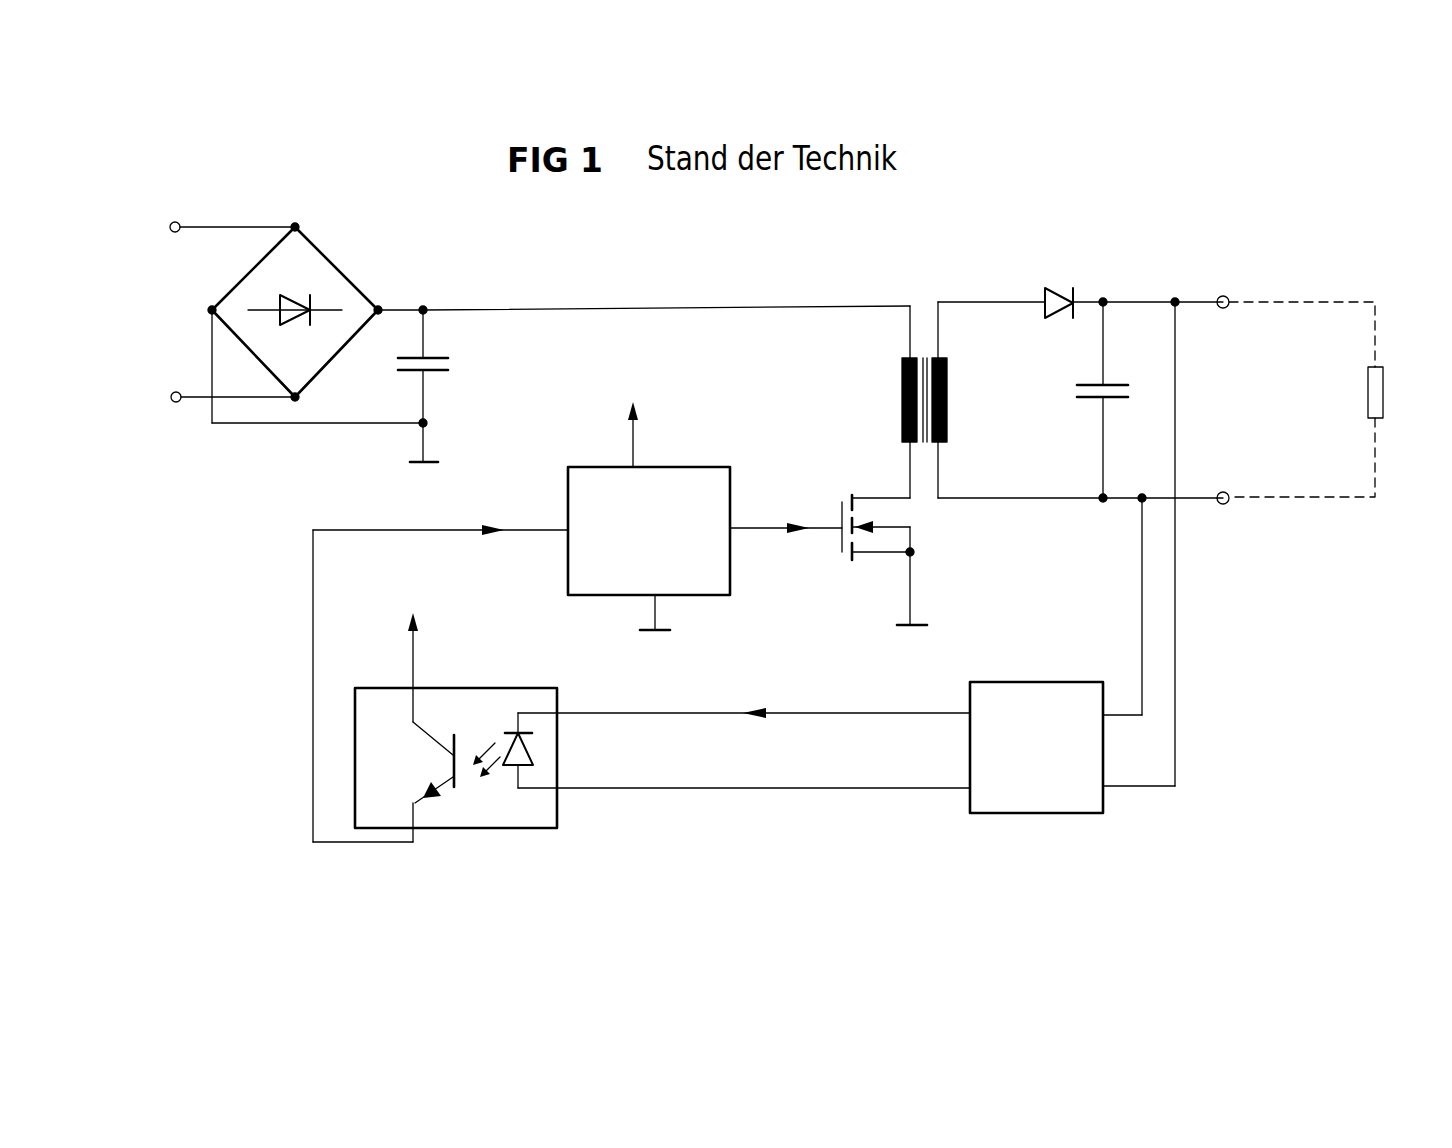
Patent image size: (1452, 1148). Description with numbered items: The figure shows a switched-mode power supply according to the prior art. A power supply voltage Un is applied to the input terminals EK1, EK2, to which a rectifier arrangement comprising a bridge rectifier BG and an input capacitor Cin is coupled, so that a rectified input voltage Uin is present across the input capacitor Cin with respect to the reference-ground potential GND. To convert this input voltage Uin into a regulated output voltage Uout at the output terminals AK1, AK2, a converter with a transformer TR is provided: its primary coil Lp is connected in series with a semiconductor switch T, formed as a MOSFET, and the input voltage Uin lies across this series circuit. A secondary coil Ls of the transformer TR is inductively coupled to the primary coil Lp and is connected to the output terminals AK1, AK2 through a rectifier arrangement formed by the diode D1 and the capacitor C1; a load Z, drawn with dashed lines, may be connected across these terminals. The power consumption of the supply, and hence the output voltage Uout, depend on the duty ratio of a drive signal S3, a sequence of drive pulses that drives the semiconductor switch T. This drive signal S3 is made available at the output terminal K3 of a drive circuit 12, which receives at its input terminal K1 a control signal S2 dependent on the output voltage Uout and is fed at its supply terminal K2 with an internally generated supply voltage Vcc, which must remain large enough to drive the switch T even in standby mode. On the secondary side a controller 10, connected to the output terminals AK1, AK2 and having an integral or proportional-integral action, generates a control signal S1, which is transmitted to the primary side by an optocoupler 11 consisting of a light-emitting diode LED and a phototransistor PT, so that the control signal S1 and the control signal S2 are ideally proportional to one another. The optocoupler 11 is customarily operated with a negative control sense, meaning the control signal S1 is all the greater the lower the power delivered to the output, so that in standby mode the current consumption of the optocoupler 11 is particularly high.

The controller 10 is at (1037, 815).
The optocoupler 11 is at (491, 798).
The drive circuit 12 is at (705, 467).
The bridge rectifier BG is at (340, 263).
The input capacitor Cin is at (452, 362).
The capacitor C1 is at (1077, 388).
The diode D1 is at (1057, 287).
The transformer TR is at (925, 377).
The primary coil Lp is at (902, 377).
The secondary coil Ls is at (947, 387).
The semiconductor switch T is at (845, 495).
The load Z is at (1385, 393).
The phototransistor PT is at (450, 762).
The light-emitting diode LED is at (533, 755).
The input terminal EK1 is at (175, 221).
The input terminal EK2 is at (176, 403).
The output terminal AK1 is at (1222, 295).
The output terminal AK2 is at (1225, 505).
The input terminal K1 is at (568, 538).
The supply terminal K2 is at (640, 465).
The output terminal K3 is at (733, 523).
The control signal S1 is at (744, 727).
The control signal S2 is at (440, 664).
The drive signal S3 is at (786, 511).
The power supply voltage Un is at (165, 365).
The input voltage Uin is at (539, 418).
The output voltage Uout is at (1235, 317).
The supply voltage Vcc is at (519, 543).
The reference-ground potential GND is at (668, 569).